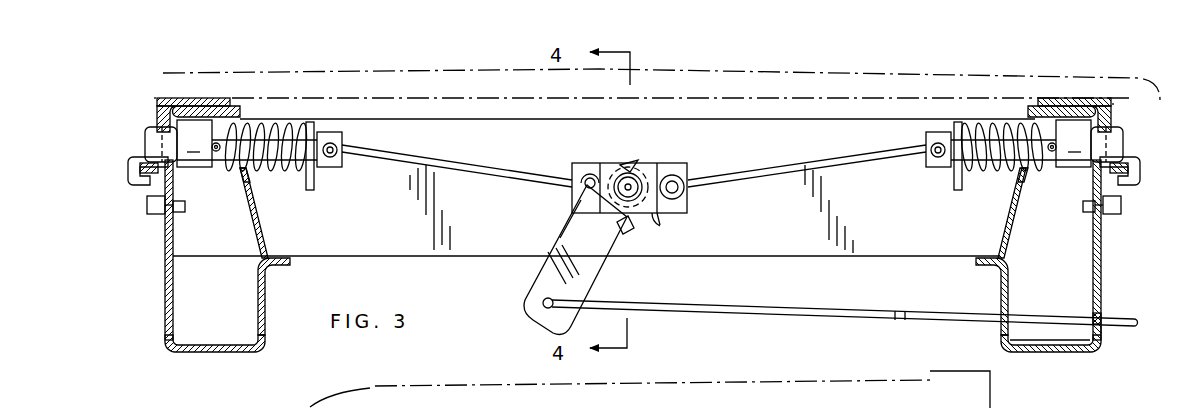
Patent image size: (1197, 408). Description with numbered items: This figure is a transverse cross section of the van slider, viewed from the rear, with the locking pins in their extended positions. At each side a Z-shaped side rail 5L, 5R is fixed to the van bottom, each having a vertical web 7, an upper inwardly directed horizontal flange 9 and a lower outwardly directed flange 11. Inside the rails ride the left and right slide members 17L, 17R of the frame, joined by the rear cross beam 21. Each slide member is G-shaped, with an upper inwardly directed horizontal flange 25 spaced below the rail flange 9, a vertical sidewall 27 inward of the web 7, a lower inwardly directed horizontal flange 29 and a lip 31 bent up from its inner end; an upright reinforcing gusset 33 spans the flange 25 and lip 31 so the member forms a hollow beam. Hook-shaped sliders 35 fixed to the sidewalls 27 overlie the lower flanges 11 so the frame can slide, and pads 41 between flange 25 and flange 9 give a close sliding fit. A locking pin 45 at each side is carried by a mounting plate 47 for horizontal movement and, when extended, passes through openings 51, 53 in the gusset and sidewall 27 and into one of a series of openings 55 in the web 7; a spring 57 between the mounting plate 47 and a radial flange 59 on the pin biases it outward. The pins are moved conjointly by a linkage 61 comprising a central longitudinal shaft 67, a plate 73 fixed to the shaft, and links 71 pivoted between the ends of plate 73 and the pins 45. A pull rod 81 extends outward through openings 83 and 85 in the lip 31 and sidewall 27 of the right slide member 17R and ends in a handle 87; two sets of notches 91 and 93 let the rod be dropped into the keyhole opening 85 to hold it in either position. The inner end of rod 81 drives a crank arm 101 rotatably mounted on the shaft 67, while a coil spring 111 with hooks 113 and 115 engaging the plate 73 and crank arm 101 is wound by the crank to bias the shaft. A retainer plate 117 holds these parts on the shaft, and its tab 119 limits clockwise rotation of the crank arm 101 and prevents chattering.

The left side rail 5L is at (152, 95).
The right side rail 5R is at (1121, 107).
The web 7 is at (157, 112).
The upper inwardly directed horizontal flange 9 is at (197, 132).
The lower outwardly directed flange 11 is at (148, 196).
The left slide member 17L is at (210, 275).
The right slide member 17R is at (1107, 270).
The rear cross beam 21 is at (868, 224).
The upper inwardly-directed horizontal flange 25 is at (238, 118).
The sidewall 27 is at (164, 237).
The lower inwardly directed horizontal flange 29 is at (200, 354).
The lip 31 is at (266, 312).
The reinforcing gusset 33 is at (268, 235).
The hook-shaped sliders 35 is at (128, 172).
The pads 41 is at (190, 98).
The locking pins 45 is at (288, 128).
The mounting plates 47 is at (314, 184).
The opening in gusset 51 is at (253, 172).
The opening in sidewall 53 is at (177, 178).
The openings in web 55 is at (146, 134).
The spring 57 is at (305, 122).
The radial flange 59 is at (212, 107).
The linkage 61 is at (699, 155).
The shaft 67 is at (630, 181).
The links 71 is at (487, 172).
The plate 73 is at (688, 208).
The pull rod 81 is at (703, 307).
The opening in lip 83 is at (1010, 331).
The opening in sidewall 85 is at (1100, 333).
The handle 87 is at (1140, 322).
The notches 91 is at (1104, 317).
The notches 93 is at (904, 312).
The crank arm 101 is at (553, 277).
The coil spring 111 is at (597, 155).
The hook 113 is at (661, 221).
The hook 115 is at (634, 229).
The retainer plate 117 is at (572, 230).
The tab 119 is at (574, 200).